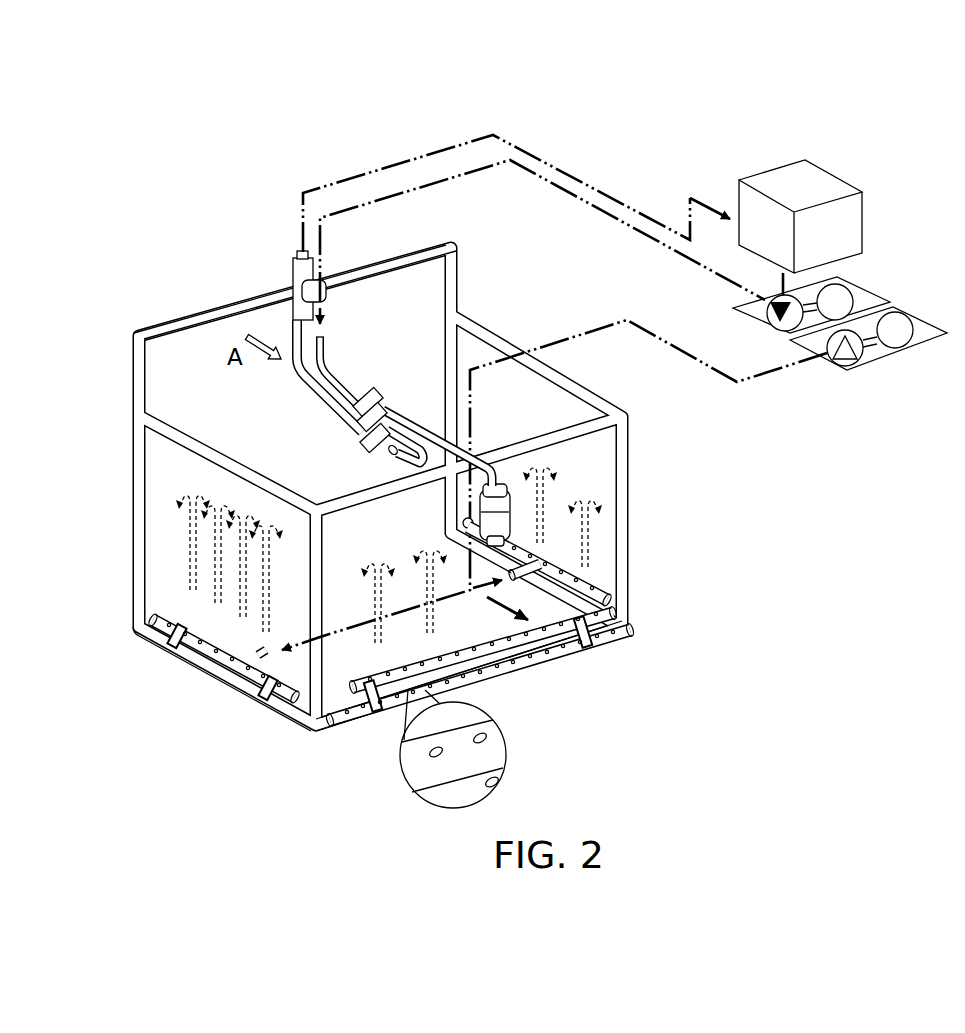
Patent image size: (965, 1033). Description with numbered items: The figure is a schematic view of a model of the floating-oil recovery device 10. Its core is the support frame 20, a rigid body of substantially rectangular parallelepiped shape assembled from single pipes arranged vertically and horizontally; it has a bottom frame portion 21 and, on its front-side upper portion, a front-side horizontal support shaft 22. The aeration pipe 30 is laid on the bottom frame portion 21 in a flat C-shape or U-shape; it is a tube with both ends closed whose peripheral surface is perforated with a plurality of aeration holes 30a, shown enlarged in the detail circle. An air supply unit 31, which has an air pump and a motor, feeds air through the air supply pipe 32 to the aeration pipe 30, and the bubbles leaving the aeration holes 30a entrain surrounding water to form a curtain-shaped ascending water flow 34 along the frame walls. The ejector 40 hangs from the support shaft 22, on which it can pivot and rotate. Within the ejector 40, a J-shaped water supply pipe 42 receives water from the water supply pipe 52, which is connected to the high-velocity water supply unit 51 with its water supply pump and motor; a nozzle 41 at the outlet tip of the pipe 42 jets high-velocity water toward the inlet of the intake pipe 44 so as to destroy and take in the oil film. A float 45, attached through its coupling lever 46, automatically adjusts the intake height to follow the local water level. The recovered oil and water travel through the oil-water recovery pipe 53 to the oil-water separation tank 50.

The cleaning apparatus 10 is at (110, 218).
The support frame 20 is at (122, 344).
The bottom frame portion 21 is at (157, 637).
The front-side horizontal support shaft 22 is at (235, 306).
The aeration pipe 30 is at (235, 675).
The aeration holes 30a is at (487, 733).
The air supply unit 31 is at (918, 313).
The air supply pipe 32 is at (760, 378).
The ascending water flow 34 is at (190, 557).
The ejector 40 is at (378, 368).
The nozzle 41 is at (387, 457).
The water supply pipe 42 is at (333, 372).
The intake pipe 44 is at (317, 403).
The float 45 is at (503, 528).
The coupling lever 46 is at (423, 430).
The oil-water separation tank 50 is at (817, 177).
The high-velocity water supply unit 51 is at (860, 283).
The water supply pipe 52 is at (320, 207).
The oil-water recovery pipe 53 is at (405, 160).